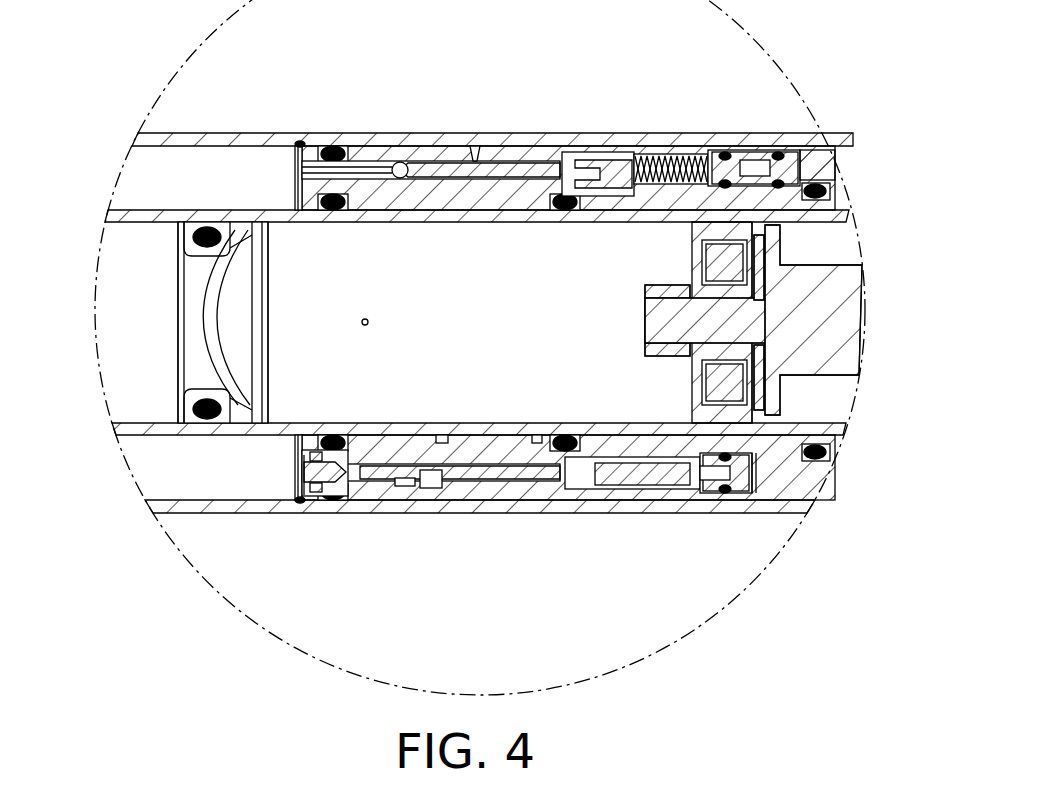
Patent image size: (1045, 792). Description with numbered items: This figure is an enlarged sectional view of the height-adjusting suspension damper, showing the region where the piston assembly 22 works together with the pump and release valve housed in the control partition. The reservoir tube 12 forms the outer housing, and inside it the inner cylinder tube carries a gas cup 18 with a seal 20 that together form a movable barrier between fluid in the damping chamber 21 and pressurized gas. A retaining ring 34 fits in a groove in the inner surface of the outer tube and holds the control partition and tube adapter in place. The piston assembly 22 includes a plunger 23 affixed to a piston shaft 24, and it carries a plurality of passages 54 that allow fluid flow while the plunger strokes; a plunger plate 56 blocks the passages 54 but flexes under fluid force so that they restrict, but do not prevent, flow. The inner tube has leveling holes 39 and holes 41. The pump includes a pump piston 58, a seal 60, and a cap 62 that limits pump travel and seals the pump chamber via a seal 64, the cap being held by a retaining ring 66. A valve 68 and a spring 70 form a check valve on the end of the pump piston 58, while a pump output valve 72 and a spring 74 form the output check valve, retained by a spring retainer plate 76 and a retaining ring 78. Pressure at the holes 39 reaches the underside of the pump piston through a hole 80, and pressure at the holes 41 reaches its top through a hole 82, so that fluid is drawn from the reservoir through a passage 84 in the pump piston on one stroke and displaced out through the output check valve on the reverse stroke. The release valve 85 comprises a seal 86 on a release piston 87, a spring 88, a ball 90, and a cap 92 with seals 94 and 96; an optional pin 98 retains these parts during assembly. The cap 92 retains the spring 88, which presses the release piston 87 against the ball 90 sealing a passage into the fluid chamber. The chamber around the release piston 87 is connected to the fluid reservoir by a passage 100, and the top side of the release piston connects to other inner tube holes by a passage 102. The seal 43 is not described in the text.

The reservoir tube 12 is at (388, 132).
The gas cup 18 is at (178, 363).
The seal 20 is at (195, 422).
The damping chamber 21 is at (329, 268).
The piston assembly 22 is at (690, 380).
The plunger 23 is at (648, 292).
The piston shaft 24 is at (830, 265).
The retaining ring 34 is at (310, 132).
The holes 39 is at (368, 322).
The holes 41 is at (693, 418).
The seal 43 is at (826, 190).
The passages 54 is at (715, 255).
The plunger plate 56 is at (770, 405).
The pump piston 58 is at (458, 500).
The seal 60 is at (485, 500).
The cap 62 is at (650, 500).
The seal 64 is at (725, 500).
The retaining ring 66 is at (765, 500).
The valve 68 is at (425, 500).
The spring 70 is at (415, 500).
The pump output valve 72 is at (303, 470).
The spring 74 is at (310, 500).
The spring retainer plate 76 is at (303, 482).
The retaining ring 78 is at (303, 460).
The hole 80 is at (537, 423).
The hole 82 is at (690, 500).
The passage 84 is at (440, 423).
The release valve 85 is at (520, 150).
The seal 86 is at (572, 152).
The release piston 87 is at (490, 162).
The spring 88 is at (650, 152).
The ball 90 is at (410, 134).
The cap 92 is at (762, 150).
The seal 94 is at (725, 150).
The seal 96 is at (808, 145).
The pin 98 is at (745, 152).
The passage 100 is at (477, 150).
The passage 102 is at (820, 168).